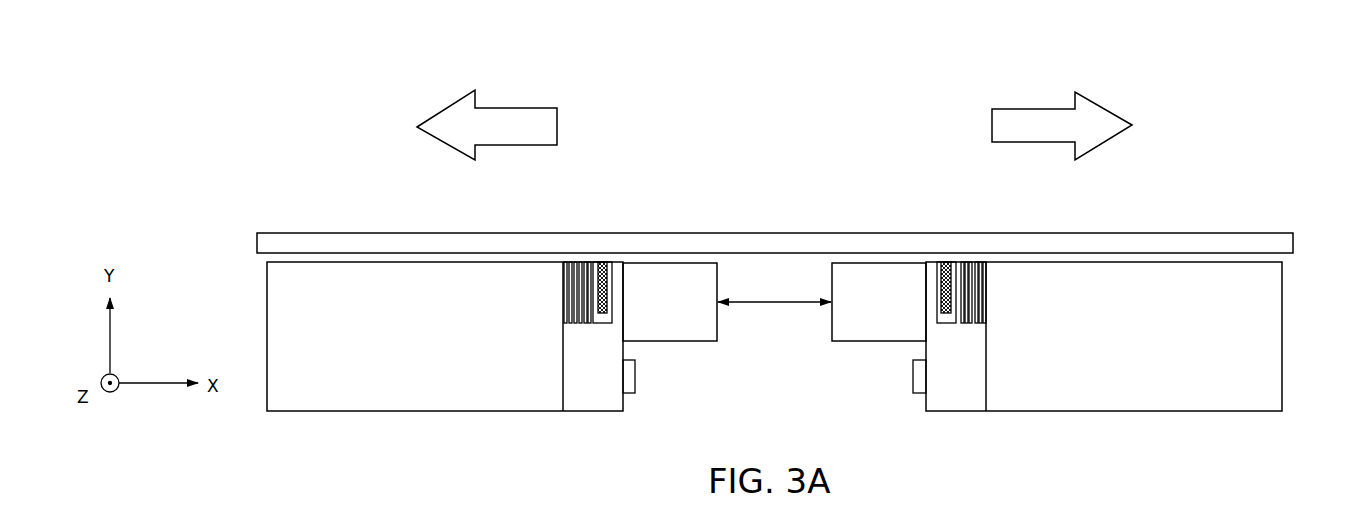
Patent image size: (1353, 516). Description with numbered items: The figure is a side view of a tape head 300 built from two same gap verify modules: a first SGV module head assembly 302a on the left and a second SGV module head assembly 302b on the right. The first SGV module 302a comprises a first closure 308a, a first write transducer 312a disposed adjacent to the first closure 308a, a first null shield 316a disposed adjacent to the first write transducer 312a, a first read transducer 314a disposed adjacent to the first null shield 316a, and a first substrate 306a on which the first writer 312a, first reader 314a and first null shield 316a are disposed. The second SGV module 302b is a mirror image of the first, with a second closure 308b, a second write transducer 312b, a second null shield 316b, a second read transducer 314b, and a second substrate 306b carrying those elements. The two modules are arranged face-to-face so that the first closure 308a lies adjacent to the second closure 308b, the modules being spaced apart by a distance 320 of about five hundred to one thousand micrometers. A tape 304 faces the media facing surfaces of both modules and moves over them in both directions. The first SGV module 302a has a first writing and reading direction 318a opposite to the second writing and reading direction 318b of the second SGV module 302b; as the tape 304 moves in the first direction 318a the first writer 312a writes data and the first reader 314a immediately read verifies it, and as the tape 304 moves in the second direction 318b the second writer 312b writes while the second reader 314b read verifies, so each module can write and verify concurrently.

The tape head 300 is at (285, 77).
The first SGV module head assembly 302a is at (403, 165).
The second SGV module head assembly 302b is at (865, 158).
The tape 304 is at (454, 243).
The first substrate 306a is at (425, 352).
The second substrate 306b is at (1148, 354).
The first closure 308a is at (690, 315).
The second closure 308b is at (905, 315).
The first write transducer 312a is at (610, 259).
The second write transducer 312b is at (942, 261).
The first read transducer 314a is at (568, 260).
The second read transducer 314b is at (978, 261).
The first null shield 316a is at (583, 260).
The second null shield 316b is at (967, 261).
The first writing and reading direction 318a is at (487, 125).
The second writing and reading direction 318b is at (1062, 126).
The distance 320 is at (771, 303).